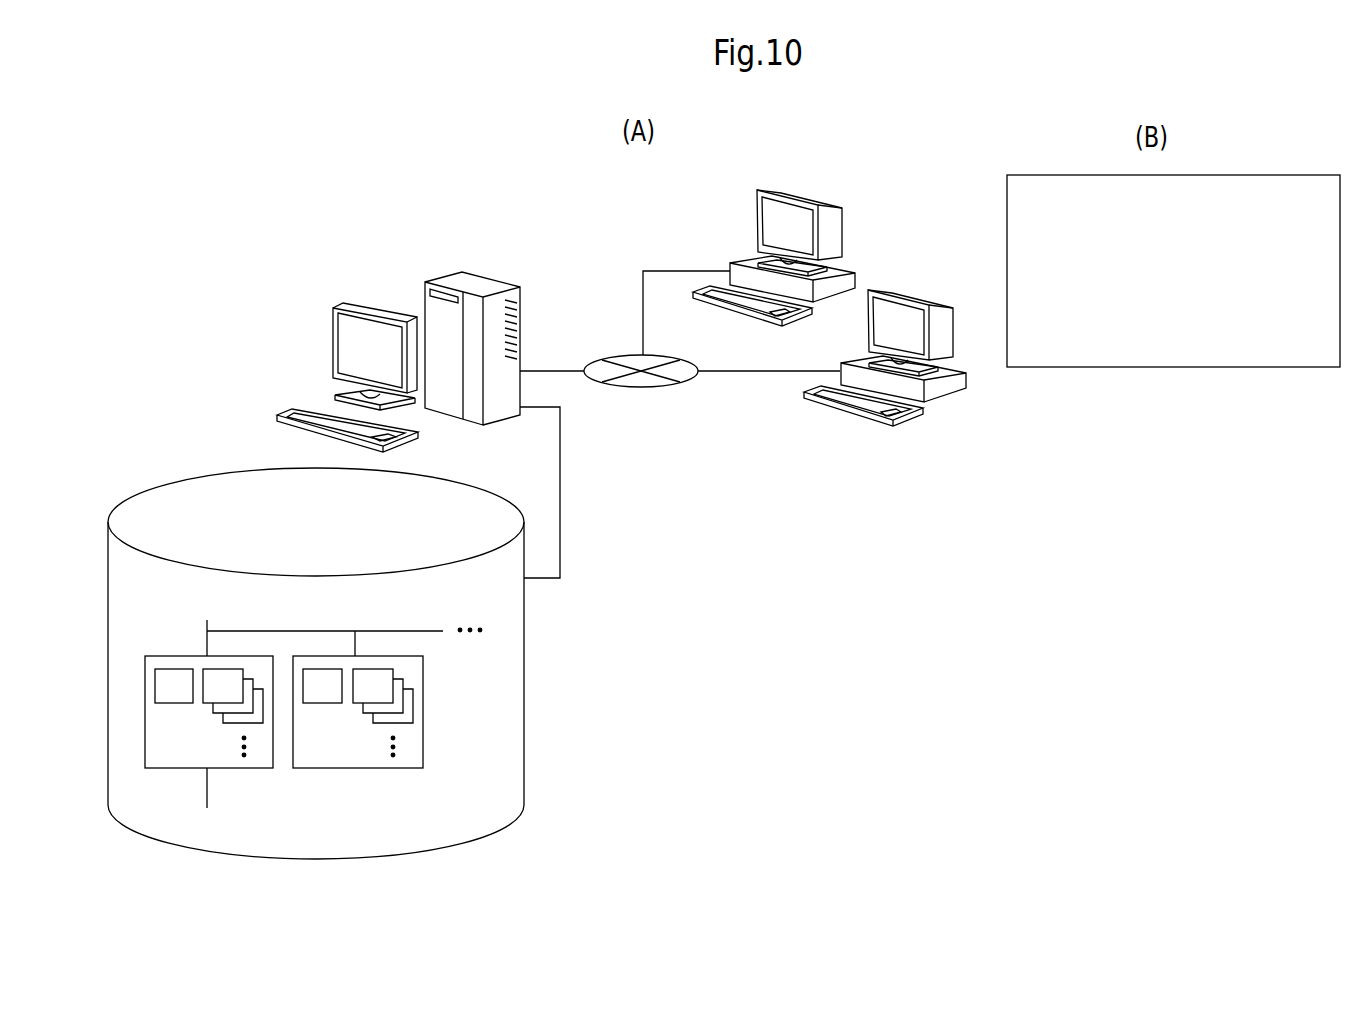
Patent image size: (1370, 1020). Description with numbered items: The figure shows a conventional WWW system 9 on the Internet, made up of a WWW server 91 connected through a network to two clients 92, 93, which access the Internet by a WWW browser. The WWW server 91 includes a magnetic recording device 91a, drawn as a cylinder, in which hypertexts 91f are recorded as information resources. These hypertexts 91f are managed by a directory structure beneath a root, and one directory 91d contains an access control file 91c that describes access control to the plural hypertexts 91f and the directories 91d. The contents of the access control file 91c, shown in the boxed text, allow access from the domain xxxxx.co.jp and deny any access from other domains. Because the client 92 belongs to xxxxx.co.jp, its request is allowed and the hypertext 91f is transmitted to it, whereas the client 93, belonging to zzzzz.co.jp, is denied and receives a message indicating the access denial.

The WWW system 9 is at (557, 217).
The WWW server 91 is at (497, 417).
The magnetic recording device 91a is at (524, 660).
The access control file 91c is at (320, 700).
The directory 91d is at (235, 768).
The hypertext 91f is at (388, 672).
The client 92 is at (743, 262).
The client 93 is at (933, 400).